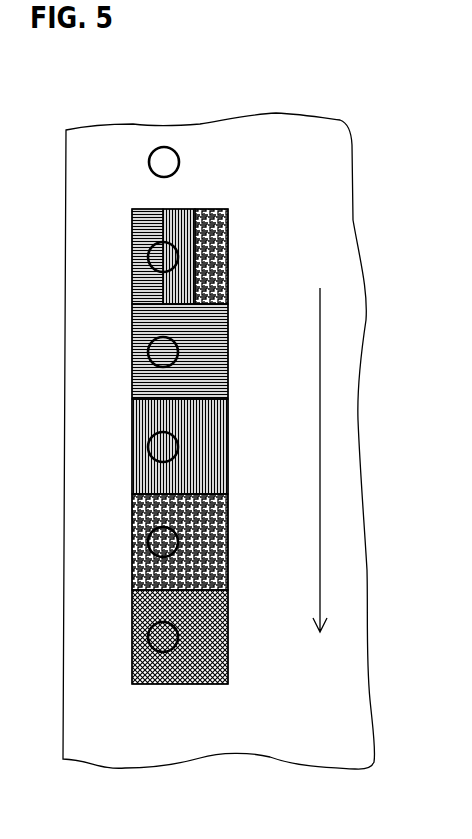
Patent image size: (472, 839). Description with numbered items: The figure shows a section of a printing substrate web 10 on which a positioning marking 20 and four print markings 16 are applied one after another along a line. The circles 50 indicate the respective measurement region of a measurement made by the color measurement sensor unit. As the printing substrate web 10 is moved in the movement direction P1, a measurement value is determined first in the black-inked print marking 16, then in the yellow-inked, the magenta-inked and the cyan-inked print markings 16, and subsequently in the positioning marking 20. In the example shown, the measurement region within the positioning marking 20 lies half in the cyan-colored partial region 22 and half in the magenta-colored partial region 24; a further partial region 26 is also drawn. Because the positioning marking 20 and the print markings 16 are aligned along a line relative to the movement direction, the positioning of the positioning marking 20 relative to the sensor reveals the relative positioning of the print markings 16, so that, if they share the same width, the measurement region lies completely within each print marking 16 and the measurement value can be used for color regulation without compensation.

The printing substrate web 10 is at (306, 141).
The positioning marking 20 is at (120, 196).
The cyan-colored partial region 22 is at (143, 225).
The magenta-colored partial region 24 is at (178, 218).
The third sub-region (maze pattern) 26 is at (226, 265).
The print markings 16 is at (138, 323).
The circles 50 is at (180, 160).
The direction P1 is at (320, 462).